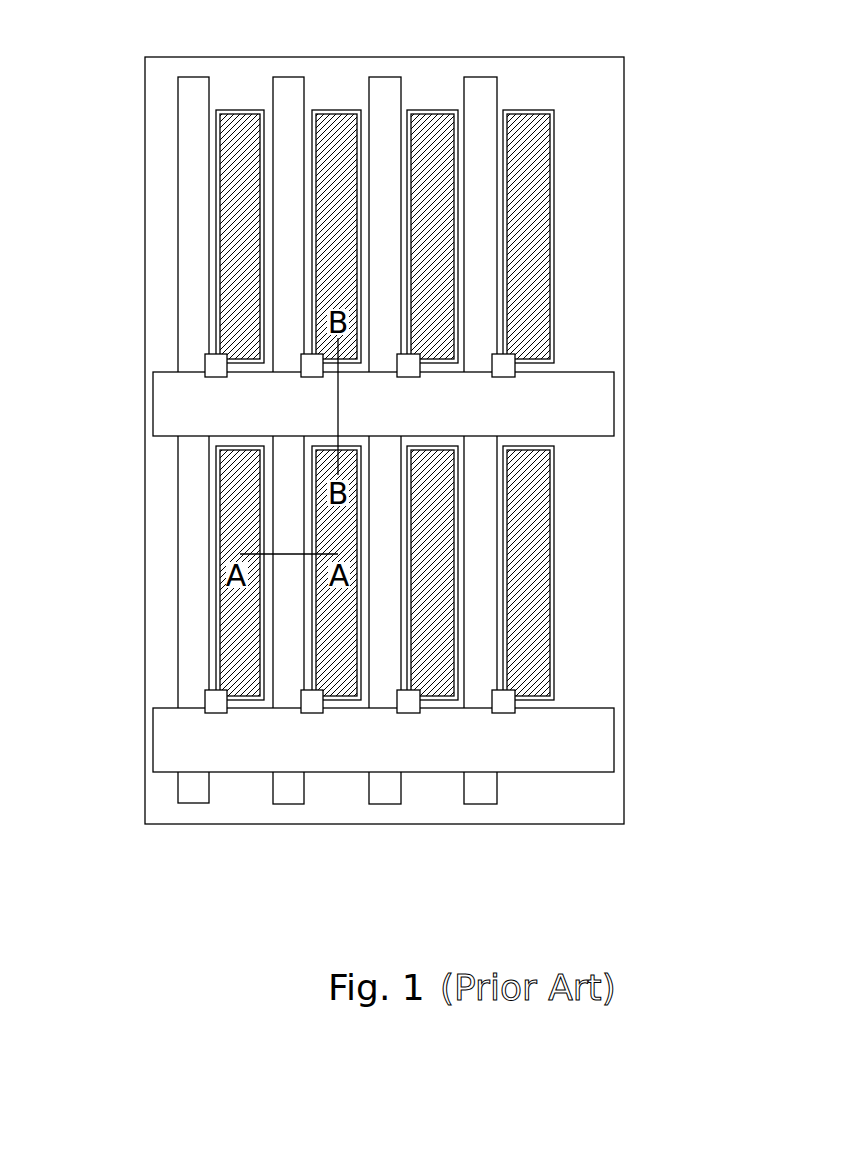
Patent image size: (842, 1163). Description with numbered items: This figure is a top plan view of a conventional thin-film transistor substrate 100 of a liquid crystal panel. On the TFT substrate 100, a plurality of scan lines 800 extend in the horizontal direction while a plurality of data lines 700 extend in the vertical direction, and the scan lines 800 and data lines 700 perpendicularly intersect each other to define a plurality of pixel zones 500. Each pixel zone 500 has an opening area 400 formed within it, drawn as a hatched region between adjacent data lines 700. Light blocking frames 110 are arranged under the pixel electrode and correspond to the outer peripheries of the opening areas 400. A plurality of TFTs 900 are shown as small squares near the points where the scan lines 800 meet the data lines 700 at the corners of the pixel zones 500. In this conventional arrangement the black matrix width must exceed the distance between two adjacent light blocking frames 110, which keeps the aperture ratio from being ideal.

The thin-film transistor substrate 100 is at (593, 638).
The light blocking frame 110 is at (242, 112).
The opening area 400 is at (533, 214).
The pixel zone 500 is at (215, 442).
The data line 700 is at (485, 95).
The scan line 800 is at (570, 400).
The thin-film transistor 900 is at (223, 362).